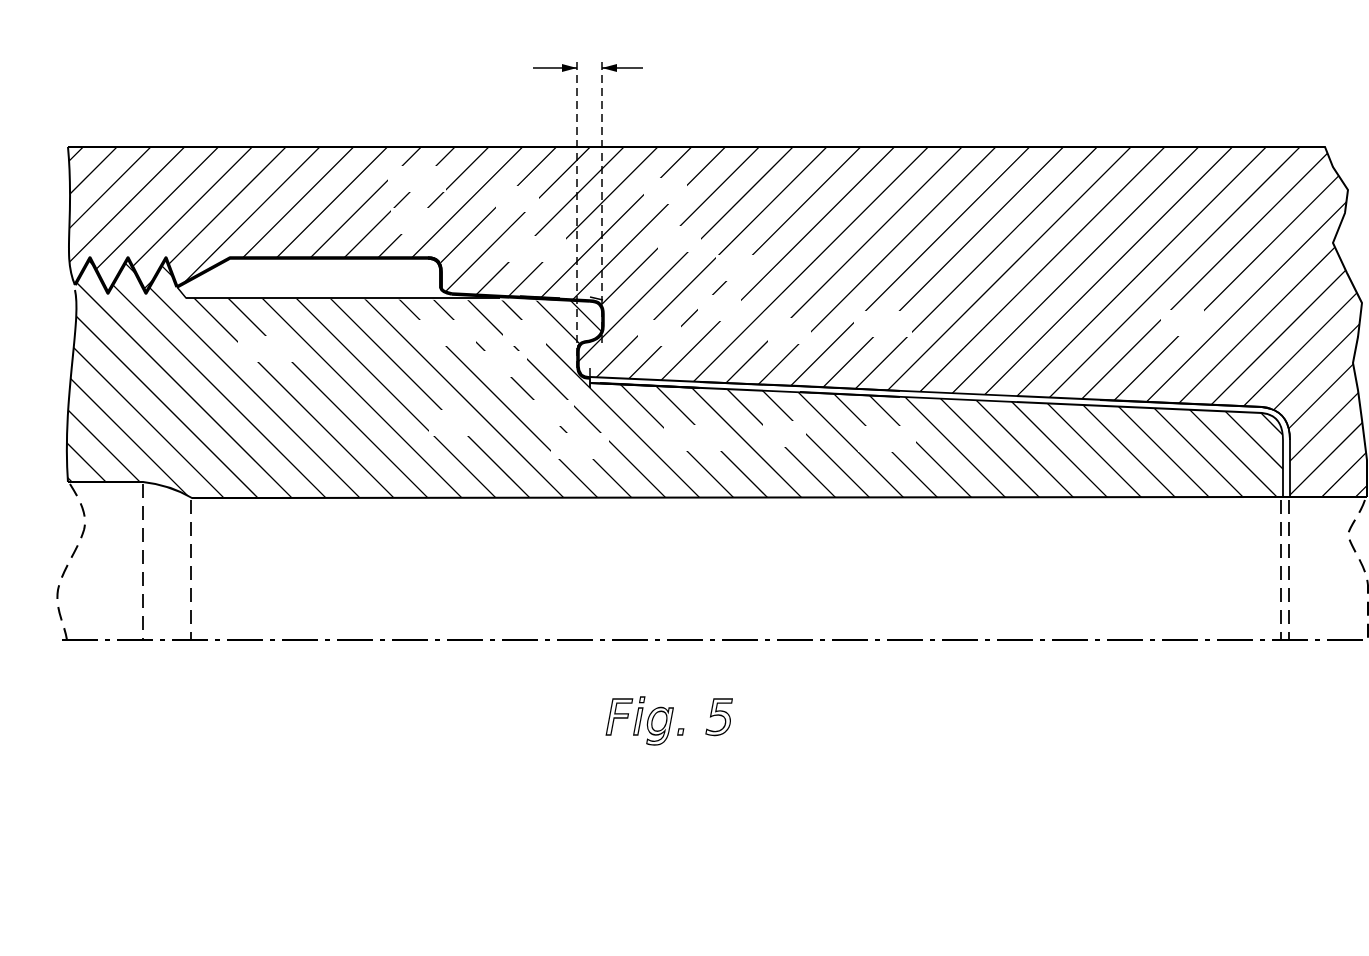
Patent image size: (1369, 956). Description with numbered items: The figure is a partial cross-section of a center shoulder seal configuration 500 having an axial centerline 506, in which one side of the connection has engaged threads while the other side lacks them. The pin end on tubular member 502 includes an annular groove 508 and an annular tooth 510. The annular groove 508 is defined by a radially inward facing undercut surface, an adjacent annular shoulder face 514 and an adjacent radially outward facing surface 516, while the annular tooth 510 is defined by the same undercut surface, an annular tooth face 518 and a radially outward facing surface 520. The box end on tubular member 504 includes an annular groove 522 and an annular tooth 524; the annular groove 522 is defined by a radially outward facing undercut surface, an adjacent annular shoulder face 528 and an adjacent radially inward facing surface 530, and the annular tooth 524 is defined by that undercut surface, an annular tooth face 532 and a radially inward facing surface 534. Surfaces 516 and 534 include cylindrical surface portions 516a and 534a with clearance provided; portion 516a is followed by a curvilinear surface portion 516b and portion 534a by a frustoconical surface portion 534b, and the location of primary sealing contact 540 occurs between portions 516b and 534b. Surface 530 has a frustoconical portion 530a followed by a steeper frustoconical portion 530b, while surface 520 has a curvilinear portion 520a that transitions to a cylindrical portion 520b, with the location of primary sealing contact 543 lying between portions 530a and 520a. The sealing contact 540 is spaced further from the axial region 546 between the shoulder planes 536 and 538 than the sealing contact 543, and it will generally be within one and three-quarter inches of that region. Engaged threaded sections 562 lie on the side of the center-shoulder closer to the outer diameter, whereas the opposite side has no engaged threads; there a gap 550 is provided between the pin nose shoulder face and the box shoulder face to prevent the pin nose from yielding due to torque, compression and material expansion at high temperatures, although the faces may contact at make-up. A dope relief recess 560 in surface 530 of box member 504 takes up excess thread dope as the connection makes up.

The center shoulder seal configuration 500 is at (266, 52).
The tubular member 502 is at (440, 484).
The tubular member 504 is at (856, 163).
The axial centerline 506 is at (840, 640).
The annular groove 508 is at (558, 369).
The annular tooth 510 is at (605, 303).
The annular shoulder face 514 is at (576, 365).
The radially outward facing surface 516 is at (767, 388).
The cylindrical surface portion 516a is at (618, 388).
The curvilinear surface portion 516b is at (835, 388).
The annular tooth face 518 is at (582, 312).
The radially outward facing surface 520 is at (358, 297).
The curvilinear portion 520a is at (545, 302).
The cylindrical portion 520b is at (250, 299).
The annular groove 522 is at (617, 304).
The annular tooth 524 is at (588, 386).
The annular shoulder face 528 is at (605, 315).
The radially inward facing surface 530 is at (476, 278).
The frustoconical portion 530a is at (540, 298).
The frustoconical portion 530b is at (452, 290).
The annular tooth face 532 is at (583, 357).
The radially inward facing surface 534 is at (753, 378).
The cylindrical surface portion 534a is at (651, 387).
The frustoconical surface portion 534b is at (832, 384).
The shoulder plane 536 is at (577, 116).
The shoulder plane 538 is at (602, 117).
The location of primary sealing contact 540 is at (1103, 397).
The location of primary sealing contact 543 is at (600, 300).
The axial region 546 is at (590, 68).
The gap 550 is at (1278, 512).
The dope relief recess 560 is at (322, 285).
The engaged threaded sections 562 is at (152, 283).